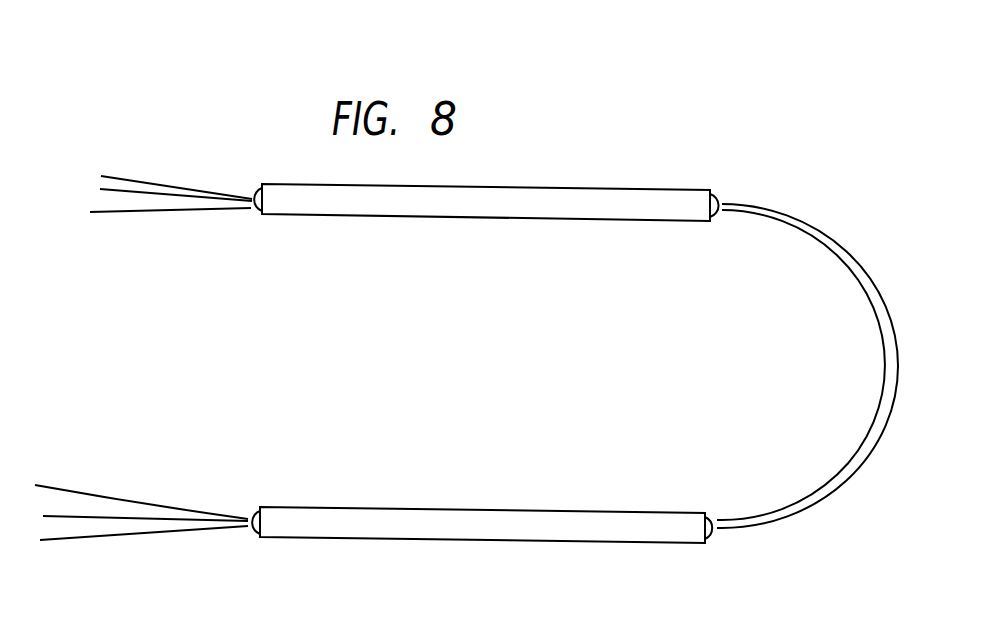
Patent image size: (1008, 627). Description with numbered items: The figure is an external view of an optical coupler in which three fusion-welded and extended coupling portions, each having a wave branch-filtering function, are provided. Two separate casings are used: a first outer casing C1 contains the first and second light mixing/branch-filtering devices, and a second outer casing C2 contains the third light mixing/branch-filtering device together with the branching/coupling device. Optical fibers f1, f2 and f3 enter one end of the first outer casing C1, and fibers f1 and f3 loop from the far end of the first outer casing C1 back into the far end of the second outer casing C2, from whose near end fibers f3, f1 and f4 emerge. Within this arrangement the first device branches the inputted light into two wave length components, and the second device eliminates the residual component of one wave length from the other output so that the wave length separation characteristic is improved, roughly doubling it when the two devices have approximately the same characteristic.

The optical fiber f1 is at (878, 266).
The optical fiber f2 is at (183, 195).
The optical fiber f3 is at (862, 307).
The optical fiber f4 is at (107, 538).
The first outer casing C1 is at (523, 187).
The second outer casing C2 is at (542, 508).